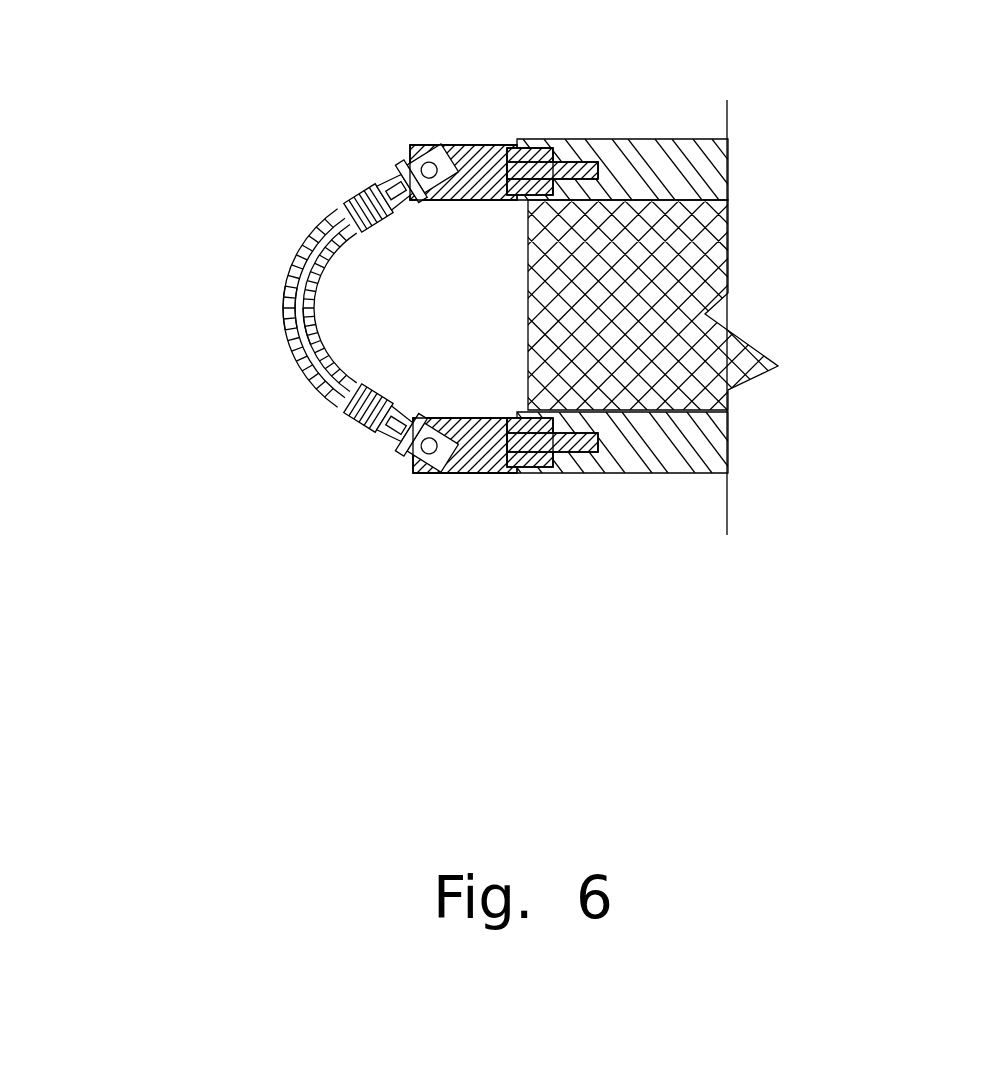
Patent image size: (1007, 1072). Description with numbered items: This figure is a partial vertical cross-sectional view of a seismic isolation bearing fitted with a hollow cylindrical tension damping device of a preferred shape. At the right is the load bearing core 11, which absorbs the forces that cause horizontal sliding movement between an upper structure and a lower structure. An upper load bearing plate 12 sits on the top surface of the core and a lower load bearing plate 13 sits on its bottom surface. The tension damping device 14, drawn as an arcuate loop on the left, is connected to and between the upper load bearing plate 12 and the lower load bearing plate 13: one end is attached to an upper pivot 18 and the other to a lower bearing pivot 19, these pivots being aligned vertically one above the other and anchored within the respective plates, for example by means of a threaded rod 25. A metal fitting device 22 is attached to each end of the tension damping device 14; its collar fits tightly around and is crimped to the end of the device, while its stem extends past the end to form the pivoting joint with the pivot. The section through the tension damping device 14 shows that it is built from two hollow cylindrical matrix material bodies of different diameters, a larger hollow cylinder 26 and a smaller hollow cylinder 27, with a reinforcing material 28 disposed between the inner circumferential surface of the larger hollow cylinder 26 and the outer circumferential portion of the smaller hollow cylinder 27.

The load bearing core 11 is at (723, 262).
The upper load bearing plate 12 is at (640, 138).
The lower load bearing plate 13 is at (725, 460).
The tension damping device 14 is at (313, 232).
The upper pivot 18 is at (468, 143).
The lower bearing pivot 19 is at (503, 473).
The metal fitting device 22 is at (375, 433).
The threaded rod 25 is at (590, 447).
The larger hollow cylinder 26 is at (292, 288).
The smaller hollow cylinder 27 is at (295, 355).
The reinforcing material 28 is at (293, 331).